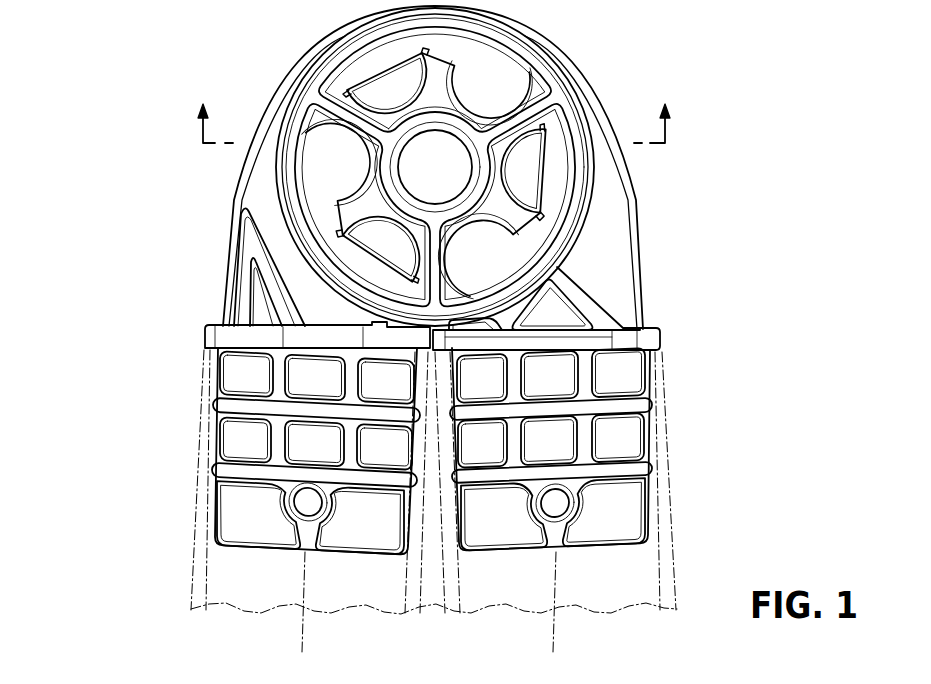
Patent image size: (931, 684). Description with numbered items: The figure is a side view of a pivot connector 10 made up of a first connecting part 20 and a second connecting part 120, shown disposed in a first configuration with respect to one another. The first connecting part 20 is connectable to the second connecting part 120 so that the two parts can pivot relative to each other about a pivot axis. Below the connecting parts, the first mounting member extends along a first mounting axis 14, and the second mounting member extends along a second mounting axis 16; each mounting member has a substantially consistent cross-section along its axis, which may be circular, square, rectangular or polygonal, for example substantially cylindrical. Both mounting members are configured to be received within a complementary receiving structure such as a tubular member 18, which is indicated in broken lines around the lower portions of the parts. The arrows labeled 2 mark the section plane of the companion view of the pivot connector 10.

The pivot connector 10 is at (116, 93).
The first connecting part 20 is at (219, 282).
The second connecting part 120 is at (676, 284).
The first mounting axis 14 is at (297, 638).
The second mounting axis 16 is at (552, 636).
The tubular member 18 is at (194, 553).
The section line 2- 2 is at (435, 116).